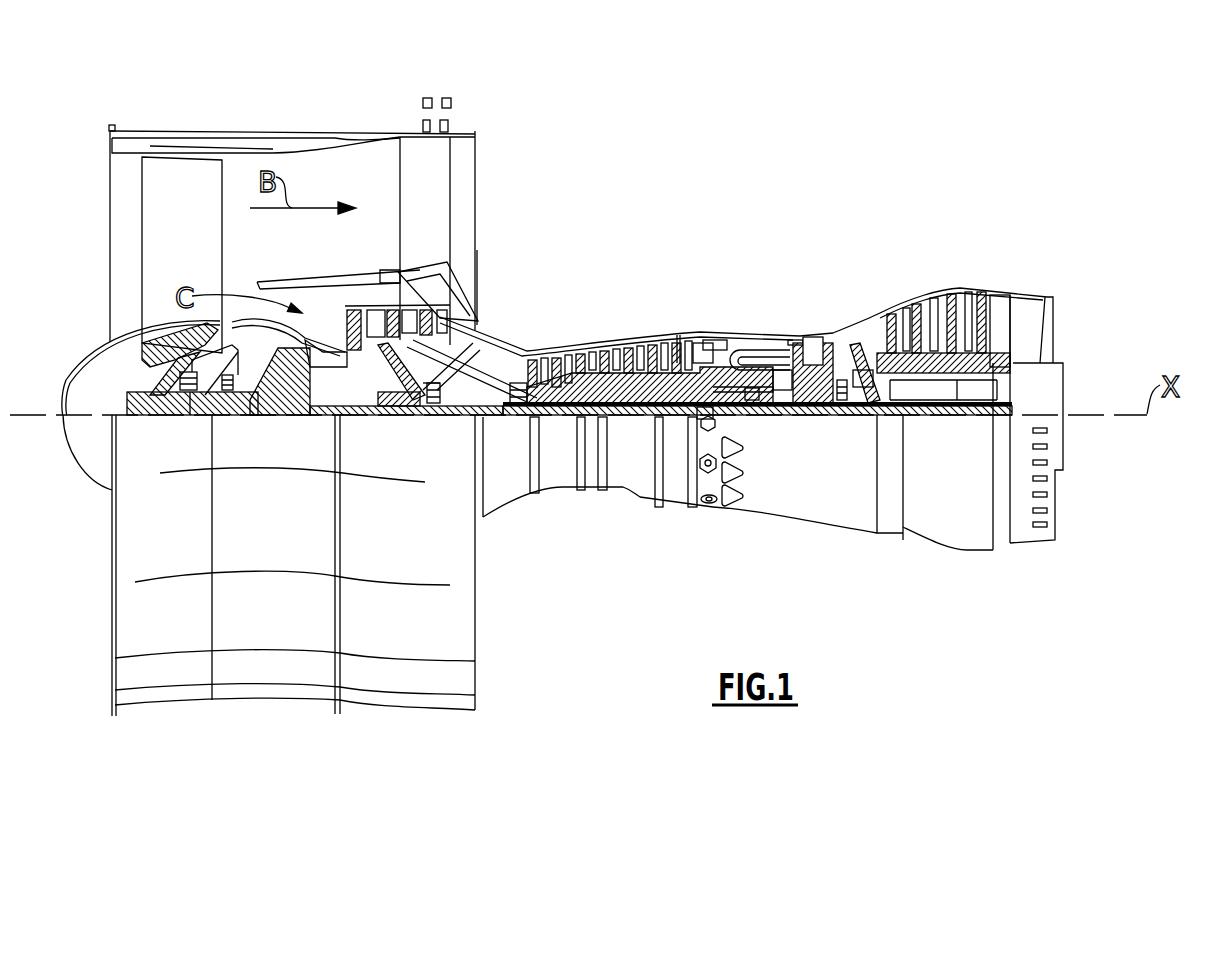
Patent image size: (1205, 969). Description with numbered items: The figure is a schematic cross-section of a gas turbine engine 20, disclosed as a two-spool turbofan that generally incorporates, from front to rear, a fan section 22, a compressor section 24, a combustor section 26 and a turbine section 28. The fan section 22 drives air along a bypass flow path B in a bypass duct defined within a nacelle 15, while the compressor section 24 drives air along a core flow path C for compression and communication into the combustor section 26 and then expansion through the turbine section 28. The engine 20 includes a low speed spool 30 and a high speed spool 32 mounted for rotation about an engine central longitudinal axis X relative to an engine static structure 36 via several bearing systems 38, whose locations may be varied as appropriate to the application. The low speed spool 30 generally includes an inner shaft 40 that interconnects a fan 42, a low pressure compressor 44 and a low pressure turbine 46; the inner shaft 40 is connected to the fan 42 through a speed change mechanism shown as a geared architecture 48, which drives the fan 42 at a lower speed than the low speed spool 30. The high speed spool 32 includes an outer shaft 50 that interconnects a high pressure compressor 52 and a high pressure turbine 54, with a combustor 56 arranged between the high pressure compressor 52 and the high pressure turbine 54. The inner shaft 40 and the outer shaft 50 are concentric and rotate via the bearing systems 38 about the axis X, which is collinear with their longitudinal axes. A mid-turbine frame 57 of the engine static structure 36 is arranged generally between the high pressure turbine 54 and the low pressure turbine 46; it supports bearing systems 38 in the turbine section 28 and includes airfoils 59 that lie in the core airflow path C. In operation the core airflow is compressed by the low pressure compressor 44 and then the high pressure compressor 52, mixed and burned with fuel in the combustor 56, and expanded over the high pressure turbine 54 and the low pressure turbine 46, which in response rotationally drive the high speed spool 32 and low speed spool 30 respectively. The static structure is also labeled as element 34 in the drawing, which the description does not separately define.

The nacelle 15 is at (338, 138).
The gas turbine engine 20 is at (758, 179).
The fan section 22 is at (320, 103).
The compressor section 24 is at (333, 246).
The combustor section 26 is at (785, 246).
The turbine section 28 is at (1007, 246).
The low speed spool 30 is at (633, 432).
The high speed spool 32 is at (672, 382).
The engine static structure 34 is at (957, 380).
The engine static structure 36 is at (670, 519).
The bearing systems 38 is at (188, 415).
The inner shaft 40 is at (498, 418).
The fan 42 is at (199, 262).
The low pressure compressor 44 is at (408, 318).
The low pressure turbine 46 is at (942, 310).
The geared architecture 48 is at (300, 400).
The outer shaft 50 is at (752, 400).
The high pressure compressor 52 is at (612, 388).
The high pressure turbine 54 is at (812, 338).
The combustor 56 is at (747, 358).
The mid-turbine frame 57 is at (859, 316).
The airfoils 59 is at (887, 387).